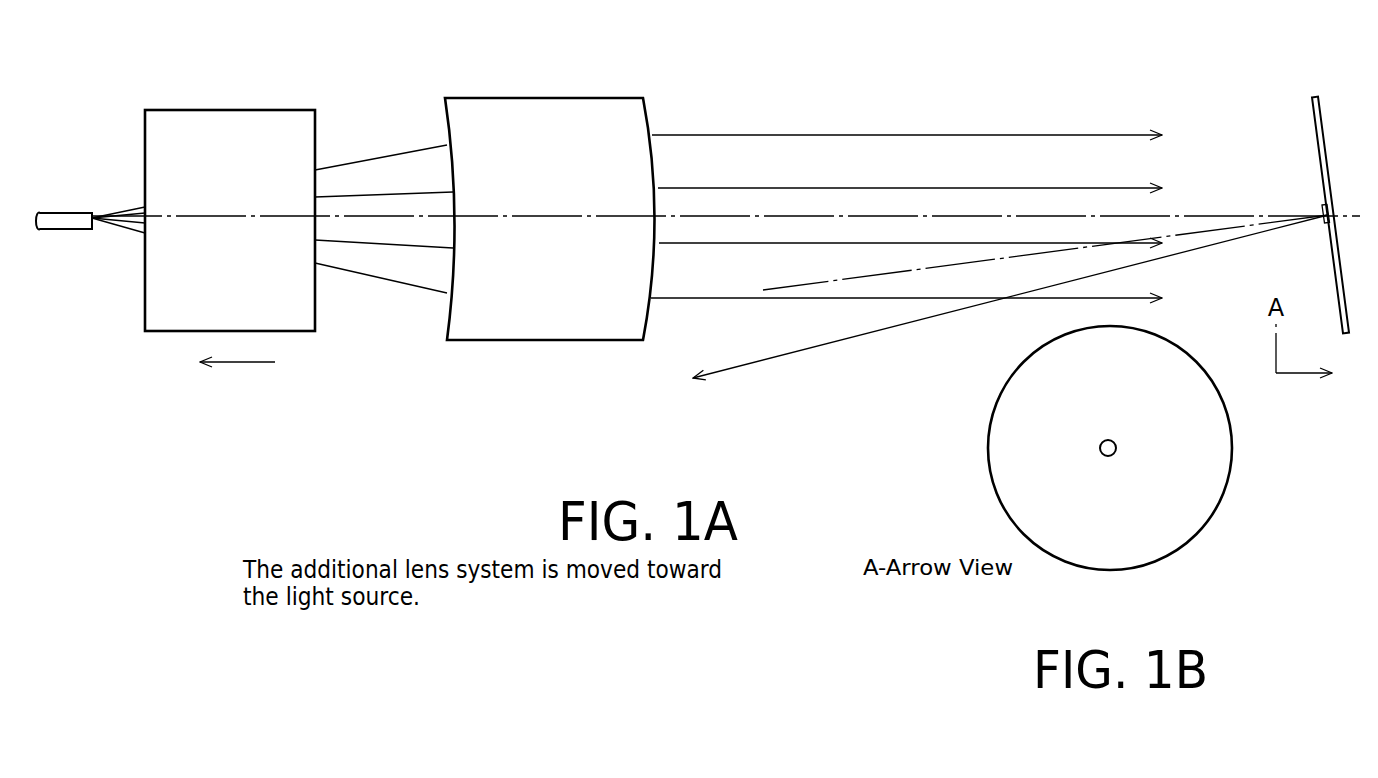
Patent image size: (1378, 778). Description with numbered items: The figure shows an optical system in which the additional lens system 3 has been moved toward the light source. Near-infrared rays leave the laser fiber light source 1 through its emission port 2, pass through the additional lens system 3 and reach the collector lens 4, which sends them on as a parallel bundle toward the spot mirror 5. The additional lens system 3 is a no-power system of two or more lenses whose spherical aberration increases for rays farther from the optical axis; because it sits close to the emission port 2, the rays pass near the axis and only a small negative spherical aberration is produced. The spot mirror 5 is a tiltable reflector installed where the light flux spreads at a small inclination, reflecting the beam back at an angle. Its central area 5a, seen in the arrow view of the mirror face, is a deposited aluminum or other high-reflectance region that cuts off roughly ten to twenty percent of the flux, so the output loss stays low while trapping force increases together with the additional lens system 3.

In FIG. 1A, the laser fiber light source 1 is at (60, 212).
In FIG. 1A, the emission port 2 is at (99, 213).
In FIG. 1A, the additional lens system 3 is at (224, 120).
In FIG. 1A, the collector lens 4 is at (561, 118).
In FIG. 1A, the spot mirror 5 is at (1312, 96).
In FIG. 1B, the spot mirror 5 is at (1010, 447).
In FIG. 1B, the central area 5a is at (1108, 457).